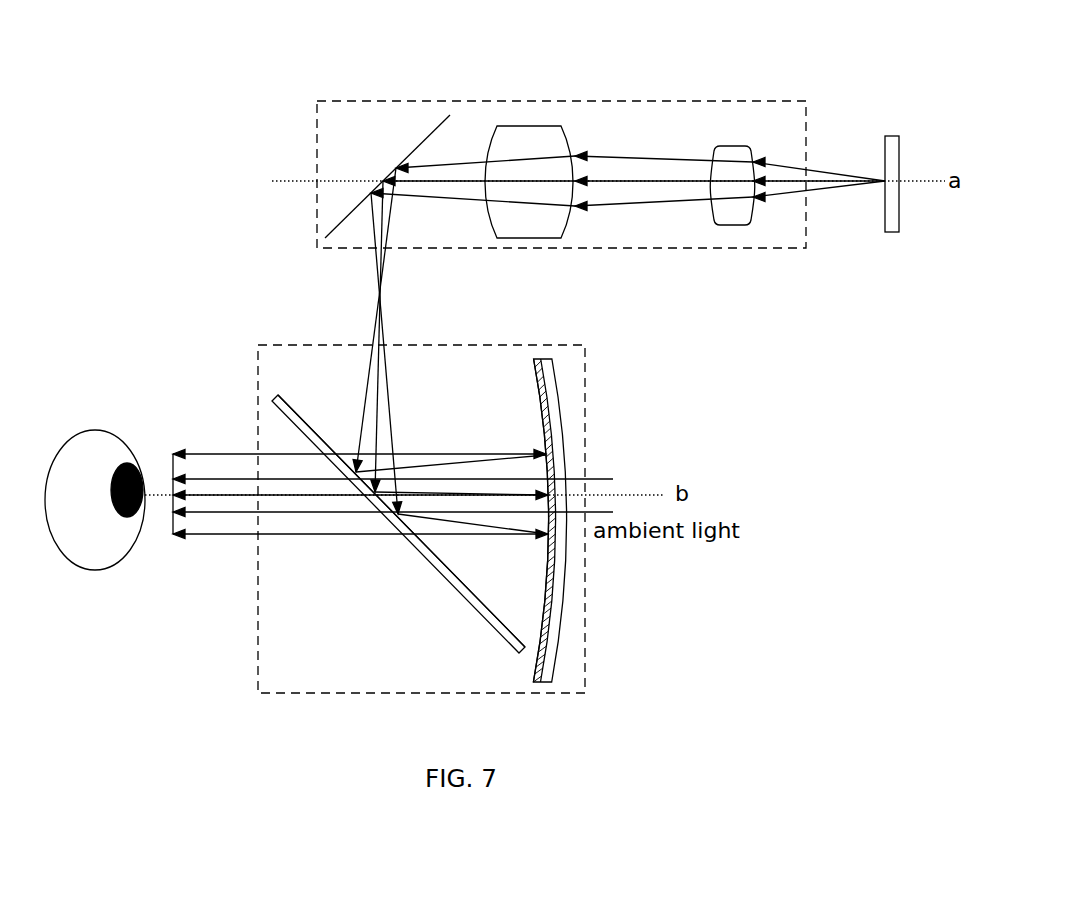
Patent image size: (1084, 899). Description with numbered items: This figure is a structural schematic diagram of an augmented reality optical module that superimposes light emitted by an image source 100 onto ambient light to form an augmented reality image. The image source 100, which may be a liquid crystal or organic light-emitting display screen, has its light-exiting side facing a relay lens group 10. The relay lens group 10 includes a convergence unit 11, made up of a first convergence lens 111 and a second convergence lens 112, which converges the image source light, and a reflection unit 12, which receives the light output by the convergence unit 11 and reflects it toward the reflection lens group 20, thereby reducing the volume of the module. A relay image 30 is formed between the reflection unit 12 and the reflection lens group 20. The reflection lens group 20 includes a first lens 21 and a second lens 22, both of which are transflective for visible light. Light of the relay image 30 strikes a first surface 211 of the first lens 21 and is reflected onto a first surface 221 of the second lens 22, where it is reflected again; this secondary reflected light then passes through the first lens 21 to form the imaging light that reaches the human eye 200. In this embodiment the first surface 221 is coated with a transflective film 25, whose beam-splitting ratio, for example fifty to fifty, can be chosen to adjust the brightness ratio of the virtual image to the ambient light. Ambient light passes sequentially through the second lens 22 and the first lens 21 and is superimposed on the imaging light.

The relay lens group 10 is at (460, 101).
The convergence unit 11 is at (755, 51).
The first convergence lens 111 is at (728, 146).
The second convergence lens 112 is at (530, 126).
The reflection unit 12 is at (325, 237).
The image source 100 is at (891, 136).
The relay image 30 is at (363, 274).
The reflection lens group 20 is at (258, 362).
The first lens 21 is at (272, 406).
The first surface of the first lens 211 is at (327, 384).
The second lens 22 is at (553, 364).
The first surface of the second lens 221 is at (533, 427).
The transflective film 25 is at (534, 365).
The human eye 200 is at (91, 430).